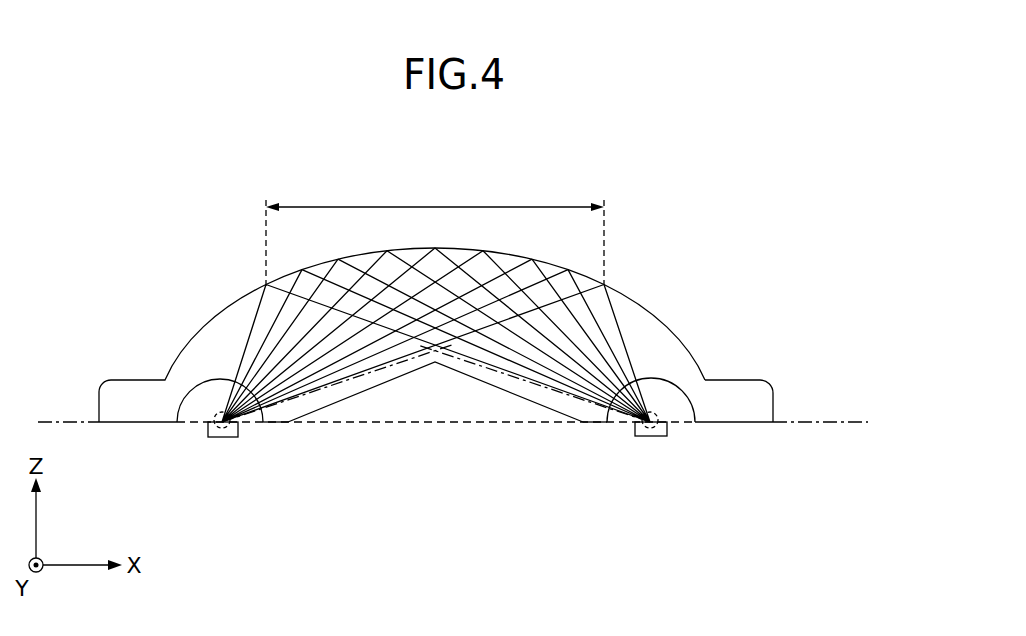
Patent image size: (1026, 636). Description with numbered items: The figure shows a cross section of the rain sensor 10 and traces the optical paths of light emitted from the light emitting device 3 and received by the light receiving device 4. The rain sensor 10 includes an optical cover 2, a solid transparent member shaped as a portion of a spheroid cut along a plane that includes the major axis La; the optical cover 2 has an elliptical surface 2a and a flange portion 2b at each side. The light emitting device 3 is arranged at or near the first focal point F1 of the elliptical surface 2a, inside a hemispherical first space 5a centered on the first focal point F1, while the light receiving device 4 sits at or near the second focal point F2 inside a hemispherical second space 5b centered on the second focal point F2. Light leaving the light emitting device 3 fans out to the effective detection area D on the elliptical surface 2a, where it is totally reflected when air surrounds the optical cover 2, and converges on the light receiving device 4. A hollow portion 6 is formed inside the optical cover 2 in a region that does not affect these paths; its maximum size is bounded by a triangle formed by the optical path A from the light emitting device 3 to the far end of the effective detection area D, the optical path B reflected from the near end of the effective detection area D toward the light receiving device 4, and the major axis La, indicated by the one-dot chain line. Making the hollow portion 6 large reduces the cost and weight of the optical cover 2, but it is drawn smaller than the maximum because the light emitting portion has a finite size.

The rain sensor 10 is at (152, 228).
The optical cover 2 is at (642, 318).
The elliptical surface 2a is at (331, 262).
The flange portion 2b is at (738, 383).
The light emitting device 3 is at (207, 430).
The light receiving device 4 is at (663, 437).
The first space 5a is at (198, 408).
The second space 5b is at (673, 407).
The hollow portion 6 is at (448, 397).
The first focal point F1 is at (237, 433).
The second focal point F2 is at (633, 437).
The optical path A is at (357, 373).
The optical path B is at (517, 373).
The effective detection area D is at (435, 232).
The major axis La is at (469, 422).